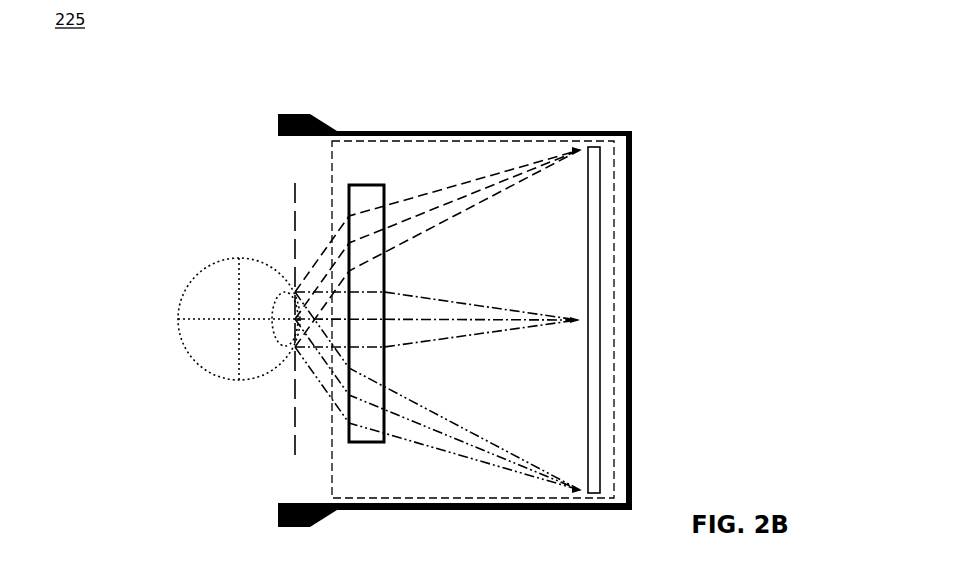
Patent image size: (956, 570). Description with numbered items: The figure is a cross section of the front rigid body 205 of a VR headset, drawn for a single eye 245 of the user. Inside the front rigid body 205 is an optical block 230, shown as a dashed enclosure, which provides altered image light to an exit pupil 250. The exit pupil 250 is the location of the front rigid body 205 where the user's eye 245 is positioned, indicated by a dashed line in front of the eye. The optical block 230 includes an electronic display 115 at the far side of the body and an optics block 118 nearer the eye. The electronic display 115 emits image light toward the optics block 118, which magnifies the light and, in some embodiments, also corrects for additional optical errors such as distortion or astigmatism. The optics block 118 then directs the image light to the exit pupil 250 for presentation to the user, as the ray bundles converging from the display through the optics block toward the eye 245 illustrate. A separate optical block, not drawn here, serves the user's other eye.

The front rigid body 205 is at (607, 126).
The optical block 230 is at (330, 423).
The electronic display 115 is at (603, 246).
The optics block 118 is at (346, 197).
The exit pupil 250 is at (286, 441).
The eye 245 is at (206, 266).